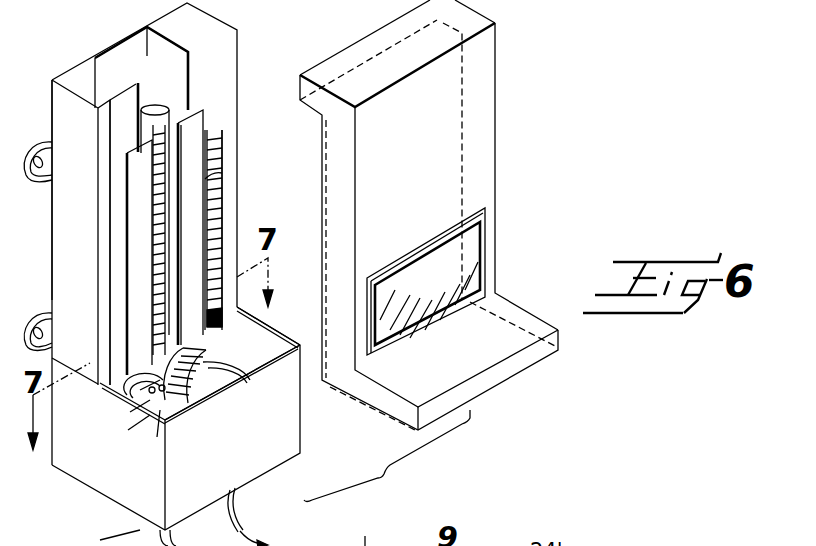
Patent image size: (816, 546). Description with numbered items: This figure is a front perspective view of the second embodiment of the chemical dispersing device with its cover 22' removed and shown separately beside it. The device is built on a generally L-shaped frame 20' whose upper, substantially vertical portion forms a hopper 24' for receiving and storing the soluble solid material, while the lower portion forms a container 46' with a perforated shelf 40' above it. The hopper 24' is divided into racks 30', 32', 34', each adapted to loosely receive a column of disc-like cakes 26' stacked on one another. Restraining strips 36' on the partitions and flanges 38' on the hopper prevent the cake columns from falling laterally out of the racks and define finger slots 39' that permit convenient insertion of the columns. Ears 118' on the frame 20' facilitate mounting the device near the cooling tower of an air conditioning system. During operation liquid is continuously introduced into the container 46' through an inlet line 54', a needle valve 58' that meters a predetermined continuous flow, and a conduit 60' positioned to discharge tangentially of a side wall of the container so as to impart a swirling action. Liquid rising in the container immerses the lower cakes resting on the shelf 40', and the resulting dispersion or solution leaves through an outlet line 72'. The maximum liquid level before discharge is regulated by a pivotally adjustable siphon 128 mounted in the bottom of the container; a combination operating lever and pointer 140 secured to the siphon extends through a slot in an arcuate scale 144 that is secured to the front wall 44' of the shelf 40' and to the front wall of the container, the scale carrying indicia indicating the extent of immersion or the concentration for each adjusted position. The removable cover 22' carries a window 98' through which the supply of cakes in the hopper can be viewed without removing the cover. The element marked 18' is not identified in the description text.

The frame 20' is at (177, 266).
The cover 22' is at (442, 215).
The hopper 24' is at (50, 250).
The cakes 26' is at (215, 240).
The rack 30' is at (53, 119).
The rack 32' is at (115, 38).
The rack 34' is at (154, 26).
The restraining strip 36' is at (171, 242).
The flange 38' is at (171, 236).
The finger slot 39' is at (171, 220).
The perforated shelf 40' is at (112, 403).
The front wall of shelf 44' is at (107, 423).
The container 46' is at (238, 362).
The inlet line 54' is at (143, 533).
The needle valve 58' is at (139, 438).
The conduit 60' is at (268, 352).
The outlet line 72' is at (259, 517).
The window 98' is at (426, 281).
The ear 118' is at (41, 246).
The siphon 128 is at (128, 430).
The operating lever and pointer 140 is at (153, 357).
The arcuate scale 144 is at (190, 408).
The cable 18' is at (92, 538).